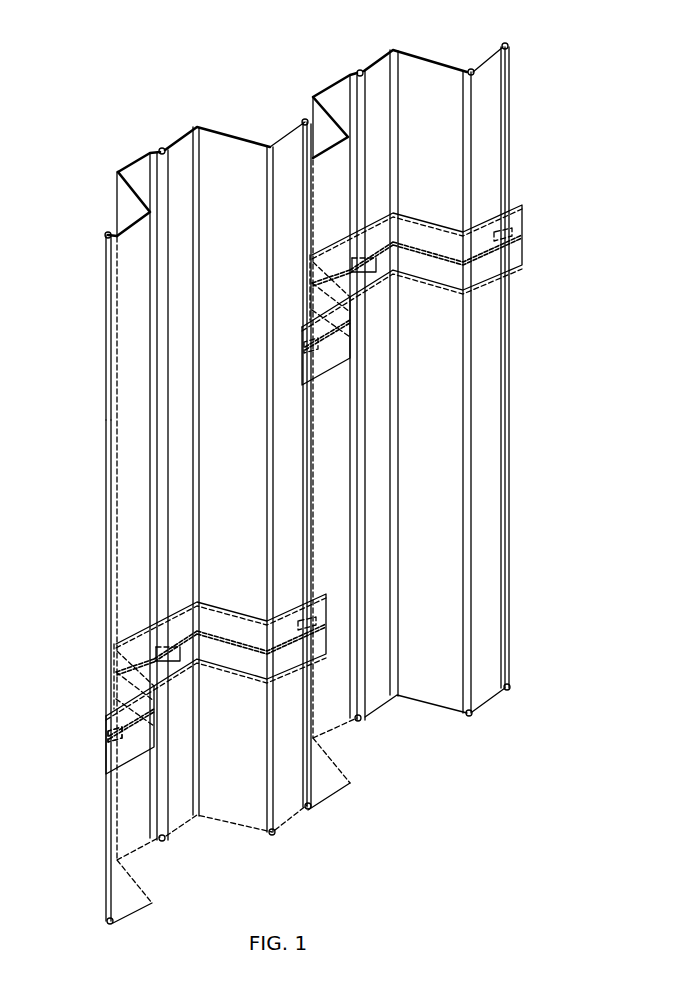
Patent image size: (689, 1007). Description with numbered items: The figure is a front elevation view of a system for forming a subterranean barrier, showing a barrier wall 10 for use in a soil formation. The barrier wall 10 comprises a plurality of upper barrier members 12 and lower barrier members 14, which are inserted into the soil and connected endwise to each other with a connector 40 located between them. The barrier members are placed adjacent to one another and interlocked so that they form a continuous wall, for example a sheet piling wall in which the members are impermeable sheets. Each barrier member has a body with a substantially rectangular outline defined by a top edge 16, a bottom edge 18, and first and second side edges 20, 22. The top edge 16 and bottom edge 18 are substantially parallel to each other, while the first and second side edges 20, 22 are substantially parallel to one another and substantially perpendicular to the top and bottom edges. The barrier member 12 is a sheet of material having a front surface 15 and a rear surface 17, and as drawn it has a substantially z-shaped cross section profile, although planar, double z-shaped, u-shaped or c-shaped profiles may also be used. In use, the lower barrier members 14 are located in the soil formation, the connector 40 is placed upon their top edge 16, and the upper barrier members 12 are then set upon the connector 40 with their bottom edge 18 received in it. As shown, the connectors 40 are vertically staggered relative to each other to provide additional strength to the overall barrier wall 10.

The barrier wall 10 is at (320, 52).
The upper barrier member 12 is at (105, 456).
The lower barrier member 14 is at (105, 855).
The front surface 15 is at (150, 880).
The top edge 16 is at (136, 152).
The rear surface 17 is at (126, 205).
The bottom edge 18 is at (96, 743).
The first side edge 20 is at (105, 286).
The second side edge 22 is at (161, 148).
The connector 40 is at (523, 227).